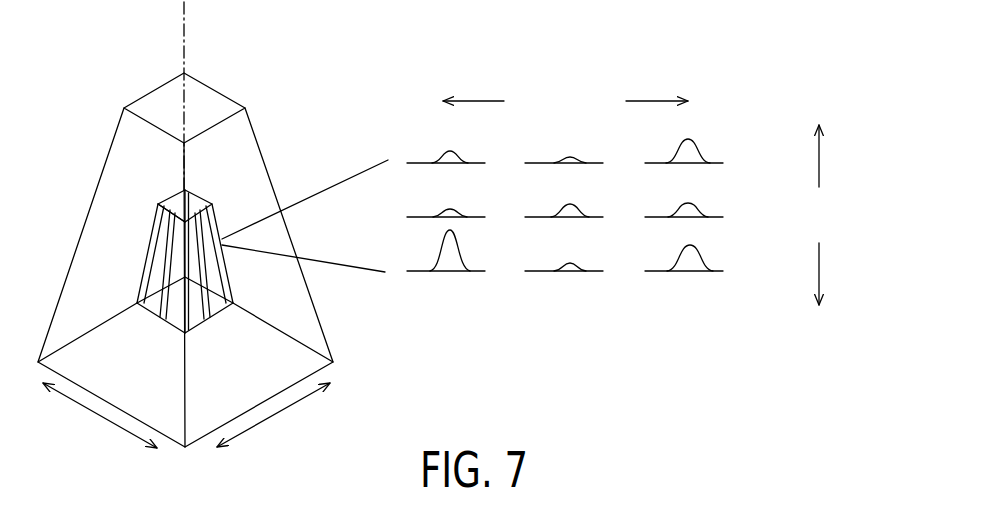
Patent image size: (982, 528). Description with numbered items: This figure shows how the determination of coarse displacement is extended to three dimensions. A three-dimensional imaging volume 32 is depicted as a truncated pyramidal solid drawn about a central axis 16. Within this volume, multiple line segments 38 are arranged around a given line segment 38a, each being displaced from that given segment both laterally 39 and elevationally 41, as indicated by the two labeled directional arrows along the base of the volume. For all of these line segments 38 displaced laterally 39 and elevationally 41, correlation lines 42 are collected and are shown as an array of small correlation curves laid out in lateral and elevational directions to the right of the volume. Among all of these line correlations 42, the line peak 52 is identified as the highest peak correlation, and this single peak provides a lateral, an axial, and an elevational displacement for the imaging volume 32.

The central axis 16 is at (184, 21).
The three-dimensional imaging volume 32 is at (246, 108).
The line segments 38 is at (185, 272).
The given line segment 38a is at (173, 197).
The lateral displacement 39 is at (98, 414).
The elevational displacement 41 is at (273, 414).
The correlation lines 42 is at (734, 106).
The line peak 52 is at (455, 230).